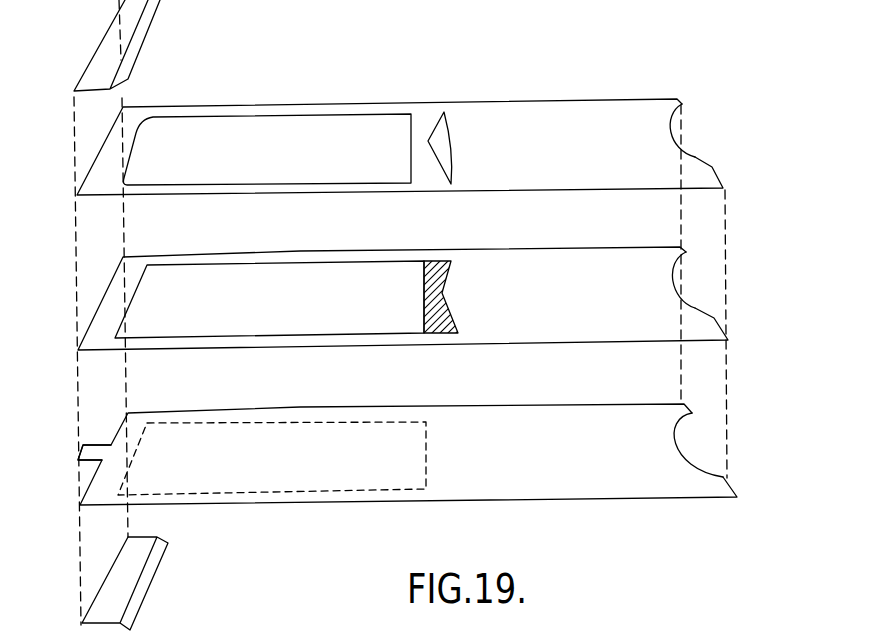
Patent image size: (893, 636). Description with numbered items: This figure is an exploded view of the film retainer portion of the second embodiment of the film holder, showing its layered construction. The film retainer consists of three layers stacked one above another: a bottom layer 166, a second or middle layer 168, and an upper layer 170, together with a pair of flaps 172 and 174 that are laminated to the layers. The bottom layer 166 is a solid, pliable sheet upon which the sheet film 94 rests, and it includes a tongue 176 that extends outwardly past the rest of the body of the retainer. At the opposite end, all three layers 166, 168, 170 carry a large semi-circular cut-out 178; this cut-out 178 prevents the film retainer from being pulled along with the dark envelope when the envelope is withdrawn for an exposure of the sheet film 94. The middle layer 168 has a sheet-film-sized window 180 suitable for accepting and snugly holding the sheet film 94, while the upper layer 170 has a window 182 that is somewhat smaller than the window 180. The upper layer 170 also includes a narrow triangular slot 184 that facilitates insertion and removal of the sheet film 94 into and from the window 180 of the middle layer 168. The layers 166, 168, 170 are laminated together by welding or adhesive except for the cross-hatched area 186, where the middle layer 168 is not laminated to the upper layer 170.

The sheet film 94 is at (255, 458).
The bottom layer 166 is at (521, 500).
The second layer 168 is at (582, 346).
The upper layer 170 is at (596, 190).
The flap 172 is at (165, 542).
The flap 174 is at (142, 45).
The tongue 176 is at (100, 452).
The semi-circular cut-out 178 is at (694, 157).
The window 180 is at (303, 283).
The window 182 is at (305, 125).
The triangular slot 184 is at (441, 143).
The area 186 is at (452, 272).